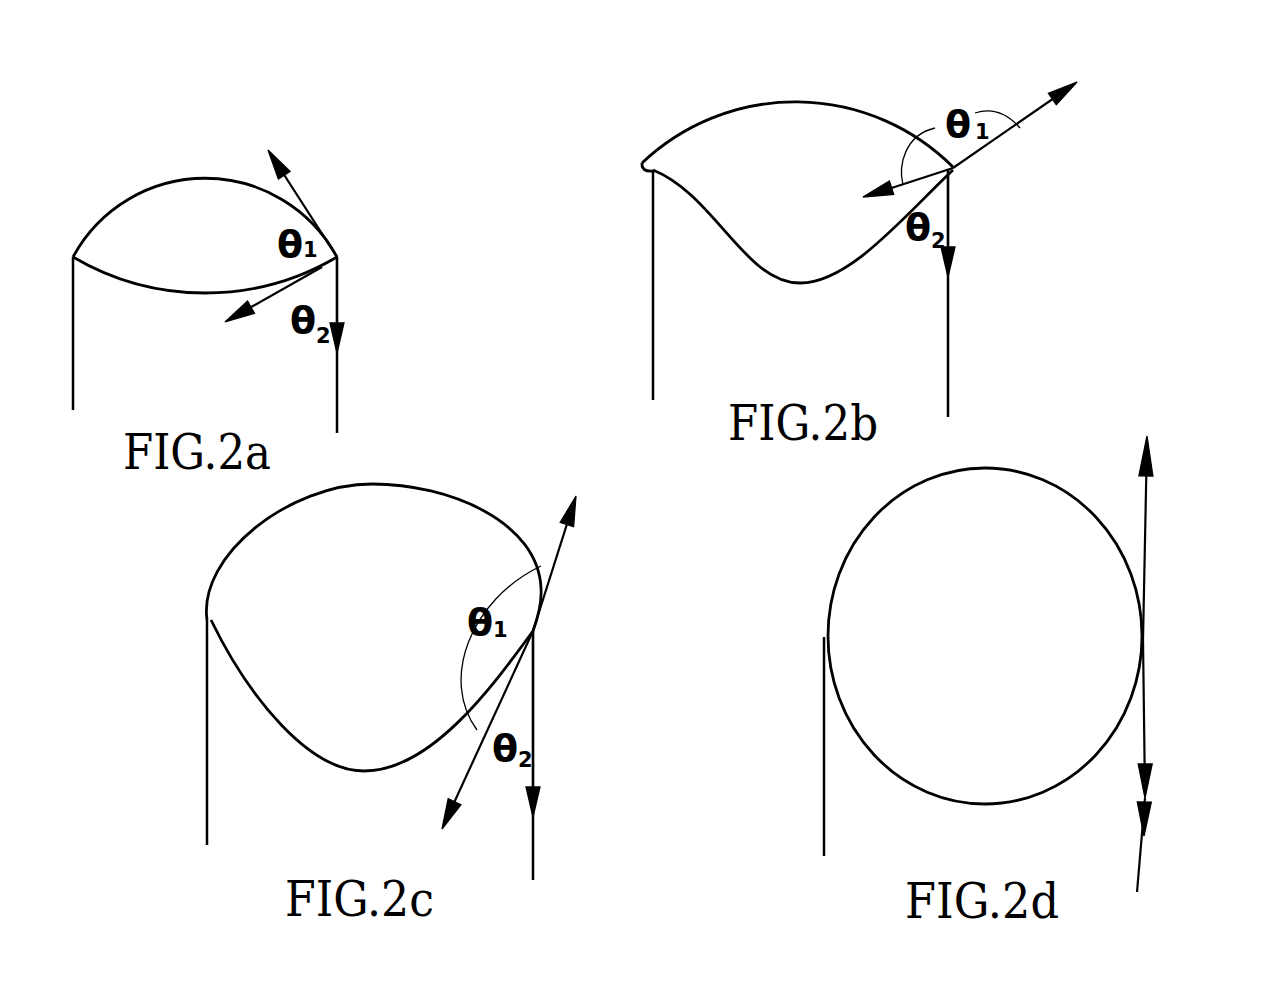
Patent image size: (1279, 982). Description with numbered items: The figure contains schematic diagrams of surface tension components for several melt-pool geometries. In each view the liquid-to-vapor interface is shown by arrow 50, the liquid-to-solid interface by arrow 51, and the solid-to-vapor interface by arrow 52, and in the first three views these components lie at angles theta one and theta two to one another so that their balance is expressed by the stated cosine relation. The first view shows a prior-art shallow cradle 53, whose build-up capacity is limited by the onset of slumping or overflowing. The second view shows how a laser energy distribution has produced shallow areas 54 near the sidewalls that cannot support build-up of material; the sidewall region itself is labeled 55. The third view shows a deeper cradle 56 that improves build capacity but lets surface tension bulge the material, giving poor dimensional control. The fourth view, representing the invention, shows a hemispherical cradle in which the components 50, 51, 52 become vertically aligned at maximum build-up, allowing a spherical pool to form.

In FIG. 2A, the liquid-to-vapor interface arrow 50 is at (270, 147).
In FIG. 2B, the liquid-to-vapor interface arrow 50 is at (1063, 92).
In FIG. 2C, the liquid-to-vapor interface arrow 50 is at (574, 498).
In FIG. 2D, the liquid-to-vapor interface arrow 50 is at (1136, 436).
In FIG. 2A, the liquid-to-solid interface arrow 51 is at (230, 317).
In FIG. 2B, the liquid-to-solid interface arrow 51 is at (868, 205).
In FIG. 2C, the liquid-to-solid interface arrow 51 is at (432, 825).
In FIG. 2D, the liquid-to-solid interface arrow 51 is at (1147, 785).
In FIG. 2A, the solid-to-vapor interface arrow 52 is at (350, 367).
In FIG. 2B, the solid-to-vapor interface arrow 52 is at (950, 300).
In FIG. 2C, the solid-to-vapor interface arrow 52 is at (539, 825).
In FIG. 2D, the solid-to-vapor interface arrow 52 is at (1143, 839).
In FIG. 2A, the shallow cradle 53 is at (115, 272).
In FIG. 2B, the shallow areas 54 is at (670, 169).
In FIG. 2B, the optical fiber body 55 is at (655, 240).
In FIG. 2C, the deeper cradle 56 is at (345, 763).